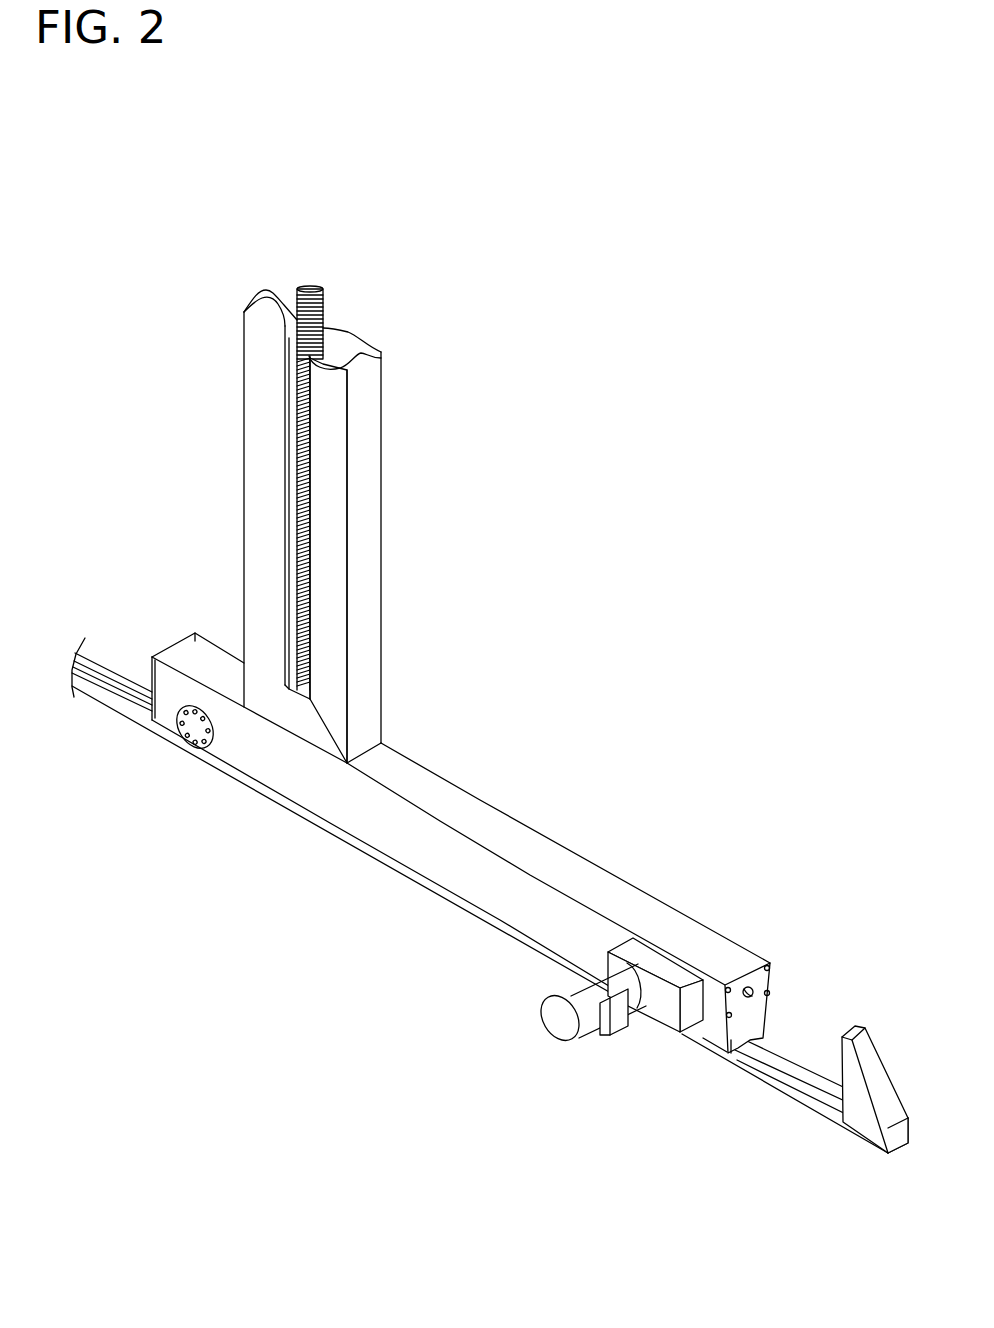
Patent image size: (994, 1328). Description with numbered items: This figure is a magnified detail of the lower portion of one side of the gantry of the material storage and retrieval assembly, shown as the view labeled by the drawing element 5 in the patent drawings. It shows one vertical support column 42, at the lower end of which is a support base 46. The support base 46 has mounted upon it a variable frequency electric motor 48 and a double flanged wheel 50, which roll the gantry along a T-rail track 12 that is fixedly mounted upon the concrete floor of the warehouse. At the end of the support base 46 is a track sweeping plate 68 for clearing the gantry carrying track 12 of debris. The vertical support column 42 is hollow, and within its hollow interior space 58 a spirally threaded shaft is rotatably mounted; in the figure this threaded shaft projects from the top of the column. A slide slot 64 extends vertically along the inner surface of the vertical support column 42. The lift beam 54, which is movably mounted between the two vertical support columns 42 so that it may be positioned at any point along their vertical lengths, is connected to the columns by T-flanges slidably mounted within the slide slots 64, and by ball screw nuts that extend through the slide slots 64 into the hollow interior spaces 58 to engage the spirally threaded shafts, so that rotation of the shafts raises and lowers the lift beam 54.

The stop block 5 is at (860, 1103).
The T-rail track 12 is at (113, 673).
The vertical support column 42 is at (360, 543).
The support base 46 is at (489, 877).
The variable frequency electric motor 48 is at (562, 1015).
The double flanged wheel 50 is at (187, 740).
The lift beam 54 is at (307, 287).
The hollow interior space 58 is at (343, 347).
The slide slot 64 is at (287, 533).
The track sweeping plate 68 is at (755, 1017).